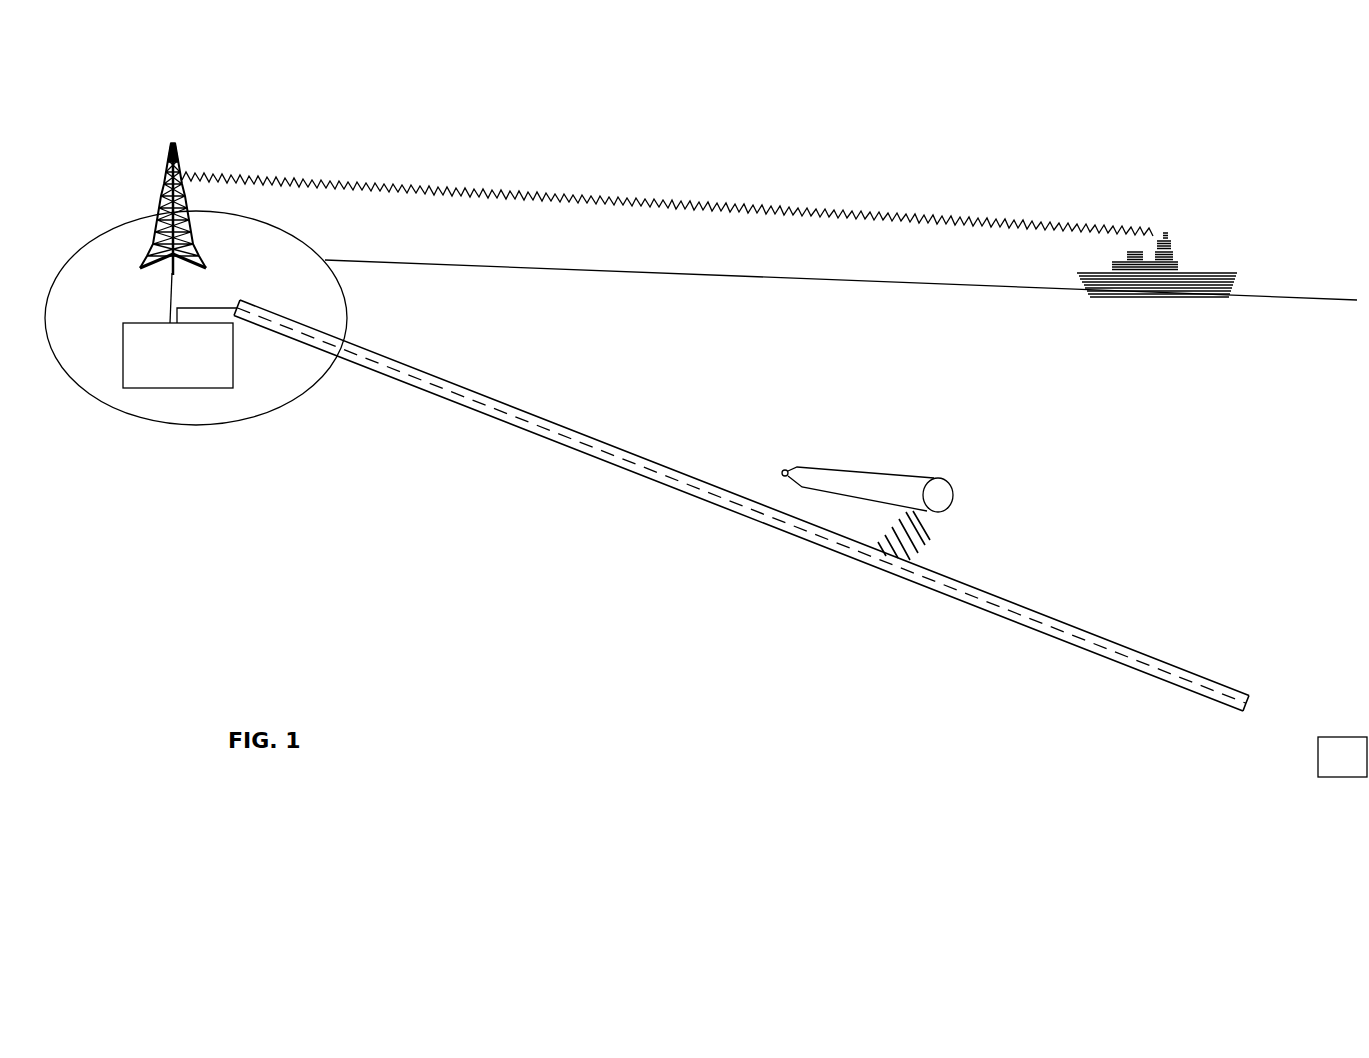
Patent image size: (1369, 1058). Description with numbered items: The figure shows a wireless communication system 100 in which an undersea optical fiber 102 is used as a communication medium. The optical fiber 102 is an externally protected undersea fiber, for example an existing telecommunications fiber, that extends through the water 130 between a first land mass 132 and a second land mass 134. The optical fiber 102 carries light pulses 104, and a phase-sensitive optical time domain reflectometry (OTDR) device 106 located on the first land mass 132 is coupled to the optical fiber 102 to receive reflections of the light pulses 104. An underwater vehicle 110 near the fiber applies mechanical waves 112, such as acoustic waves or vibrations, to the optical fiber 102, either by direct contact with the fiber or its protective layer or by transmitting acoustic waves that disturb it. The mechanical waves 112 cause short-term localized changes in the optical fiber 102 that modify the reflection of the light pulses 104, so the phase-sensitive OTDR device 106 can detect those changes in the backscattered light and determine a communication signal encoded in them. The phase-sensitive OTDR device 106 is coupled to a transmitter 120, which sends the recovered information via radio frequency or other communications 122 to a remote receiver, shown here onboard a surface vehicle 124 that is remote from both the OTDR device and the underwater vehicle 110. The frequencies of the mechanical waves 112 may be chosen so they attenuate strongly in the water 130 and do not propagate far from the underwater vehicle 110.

The wireless communication system 100 is at (1091, 94).
The optical fiber 102 is at (583, 456).
The light pulses 104 is at (665, 476).
The phase-sensitive optical time domain reflectometry (OTDR) device 106 is at (176, 388).
The underwater vehicle 110 is at (933, 478).
The mechanical waves 112 is at (913, 540).
The transmitter 120 is at (167, 213).
The radio frequency communications or other communications 122 is at (498, 200).
The surface vehicle 124 is at (1237, 280).
The water 130 is at (841, 299).
The first land mass 132 is at (196, 318).
The second land mass 134 is at (1275, 722).